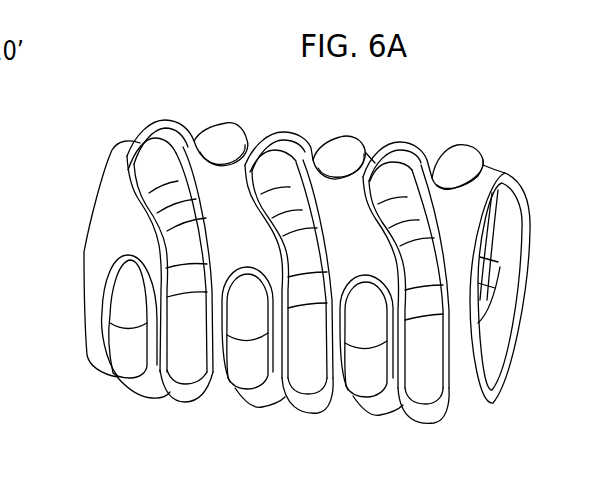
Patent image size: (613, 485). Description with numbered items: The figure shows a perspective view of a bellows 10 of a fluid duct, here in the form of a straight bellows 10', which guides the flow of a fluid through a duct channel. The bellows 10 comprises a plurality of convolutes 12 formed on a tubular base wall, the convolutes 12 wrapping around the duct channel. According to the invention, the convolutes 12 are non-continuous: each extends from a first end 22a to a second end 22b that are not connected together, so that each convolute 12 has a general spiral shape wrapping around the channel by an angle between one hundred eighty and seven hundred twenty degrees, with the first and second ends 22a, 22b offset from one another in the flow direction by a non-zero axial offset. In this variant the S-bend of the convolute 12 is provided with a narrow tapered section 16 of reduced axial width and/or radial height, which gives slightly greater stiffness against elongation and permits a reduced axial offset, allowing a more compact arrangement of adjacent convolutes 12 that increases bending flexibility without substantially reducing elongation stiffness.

The bellows 10 is at (309, 239).
The straight bellows 10' is at (309, 239).
The convolutes 12 is at (158, 110).
The narrow tapered section 16 is at (164, 194).
The first end 22a is at (129, 284).
The second end 22b is at (215, 147).